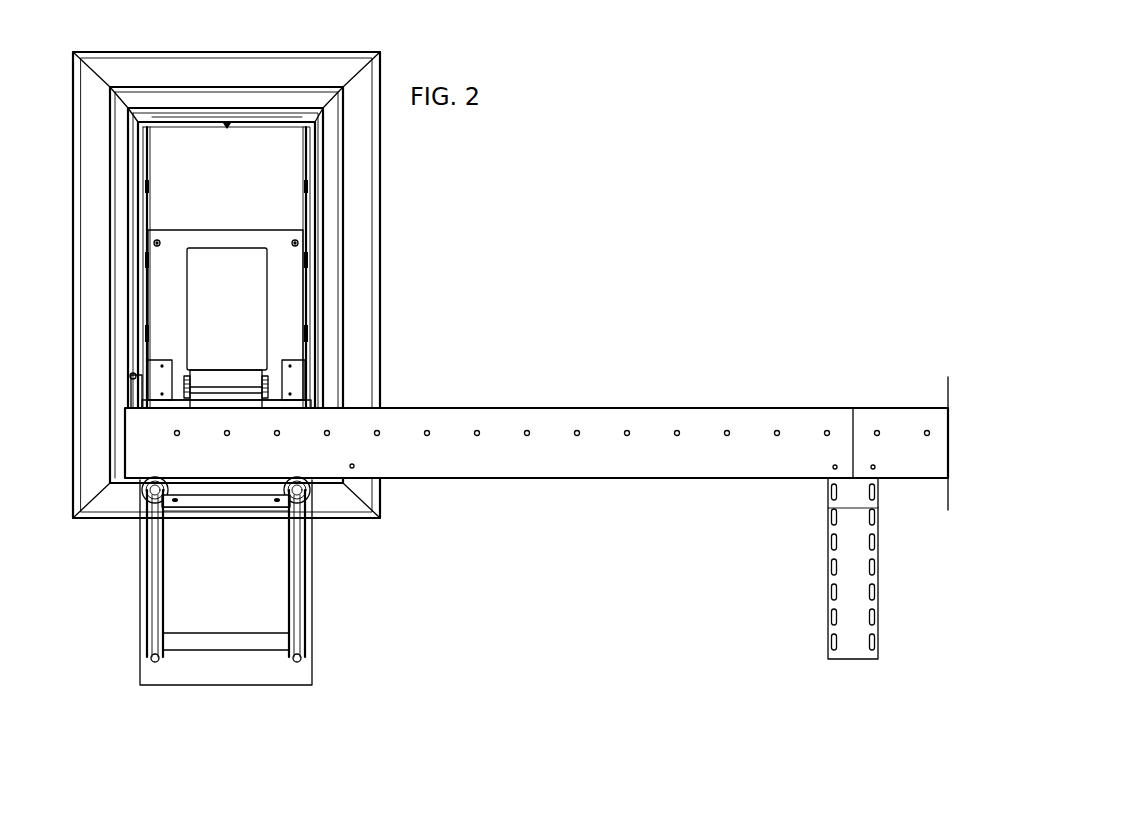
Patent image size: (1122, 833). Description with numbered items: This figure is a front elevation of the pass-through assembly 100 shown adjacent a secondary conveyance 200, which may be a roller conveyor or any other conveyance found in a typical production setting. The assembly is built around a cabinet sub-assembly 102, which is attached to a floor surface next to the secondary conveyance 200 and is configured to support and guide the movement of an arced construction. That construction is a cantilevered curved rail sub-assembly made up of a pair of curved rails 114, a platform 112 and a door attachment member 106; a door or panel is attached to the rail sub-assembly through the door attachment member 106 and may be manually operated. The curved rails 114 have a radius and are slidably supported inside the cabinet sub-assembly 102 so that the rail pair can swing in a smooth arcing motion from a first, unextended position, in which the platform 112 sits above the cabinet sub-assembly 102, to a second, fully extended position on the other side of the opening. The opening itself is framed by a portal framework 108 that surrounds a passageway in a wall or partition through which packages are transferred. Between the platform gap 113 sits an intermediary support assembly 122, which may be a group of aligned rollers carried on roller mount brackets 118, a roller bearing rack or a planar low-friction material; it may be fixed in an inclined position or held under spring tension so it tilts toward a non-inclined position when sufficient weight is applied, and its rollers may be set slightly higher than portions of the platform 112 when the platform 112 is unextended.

The pass-through assembly 100 is at (470, 256).
The cabinet sub-assembly 102 is at (227, 620).
The door attachment member 106 is at (288, 270).
The portal framework 108 is at (290, 56).
The platform 112 is at (153, 365).
The gap 113 is at (231, 350).
The curved rail 114 is at (147, 553).
The roller mount bracket 118 is at (185, 393).
The intermediary support assembly 122 is at (238, 378).
The secondary conveyance 200 is at (541, 493).